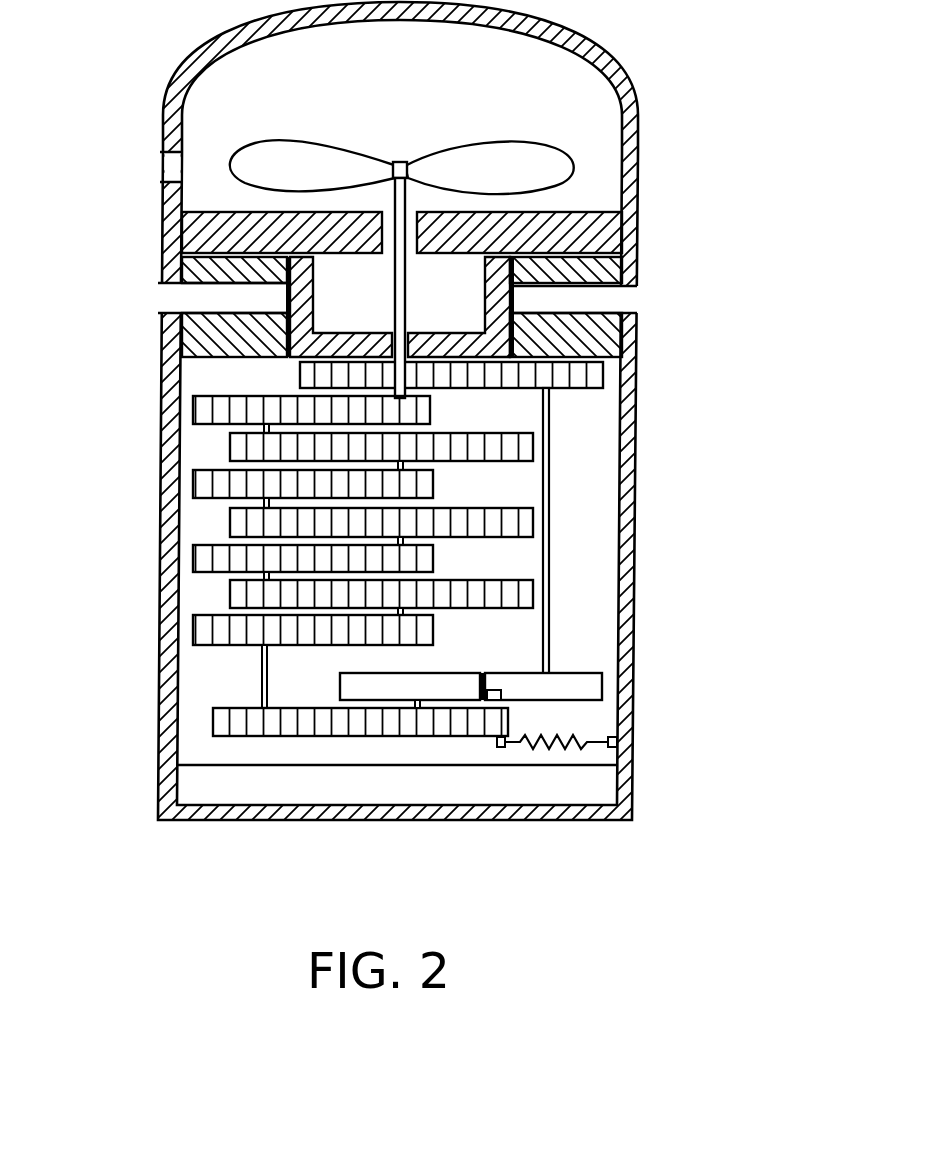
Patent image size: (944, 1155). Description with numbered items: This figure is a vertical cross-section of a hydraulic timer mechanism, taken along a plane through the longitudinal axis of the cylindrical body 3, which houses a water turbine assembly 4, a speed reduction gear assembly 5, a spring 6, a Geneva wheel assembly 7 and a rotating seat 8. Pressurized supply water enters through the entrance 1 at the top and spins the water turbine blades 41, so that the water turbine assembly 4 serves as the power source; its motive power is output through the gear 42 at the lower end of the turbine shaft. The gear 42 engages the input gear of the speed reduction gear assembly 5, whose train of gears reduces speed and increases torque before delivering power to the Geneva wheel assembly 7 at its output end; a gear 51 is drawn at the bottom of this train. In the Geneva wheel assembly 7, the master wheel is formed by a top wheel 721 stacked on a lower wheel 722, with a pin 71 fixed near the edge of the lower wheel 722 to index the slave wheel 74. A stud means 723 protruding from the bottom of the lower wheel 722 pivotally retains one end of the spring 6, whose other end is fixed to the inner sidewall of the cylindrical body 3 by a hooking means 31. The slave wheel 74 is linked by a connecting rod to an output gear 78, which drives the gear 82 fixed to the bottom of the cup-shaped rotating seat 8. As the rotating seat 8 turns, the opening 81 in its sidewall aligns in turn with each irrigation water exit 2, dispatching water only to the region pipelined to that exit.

The entrance 1 is at (182, 166).
The irrigation water exits 2 is at (182, 298).
The cylindrical body 3 is at (641, 532).
The water turbine assembly 4 is at (402, 131).
The water turbine blades 41 is at (307, 150).
The gear 42 is at (421, 418).
The speed reduction gear assembly 5 is at (286, 552).
The output gear 51 is at (237, 710).
The spring 6 is at (570, 746).
The Geneva wheel assembly 7 is at (411, 710).
The pin 71 is at (495, 692).
The top wheel 721 is at (423, 683).
The lower wheel 722 is at (375, 733).
The stud means 723 is at (495, 748).
The slave wheel 74 is at (555, 685).
The gear 78 is at (560, 389).
The rotating seat 8 is at (295, 360).
The opening 81 is at (302, 308).
The gear 82 is at (475, 390).
The hooking means 31 is at (620, 741).